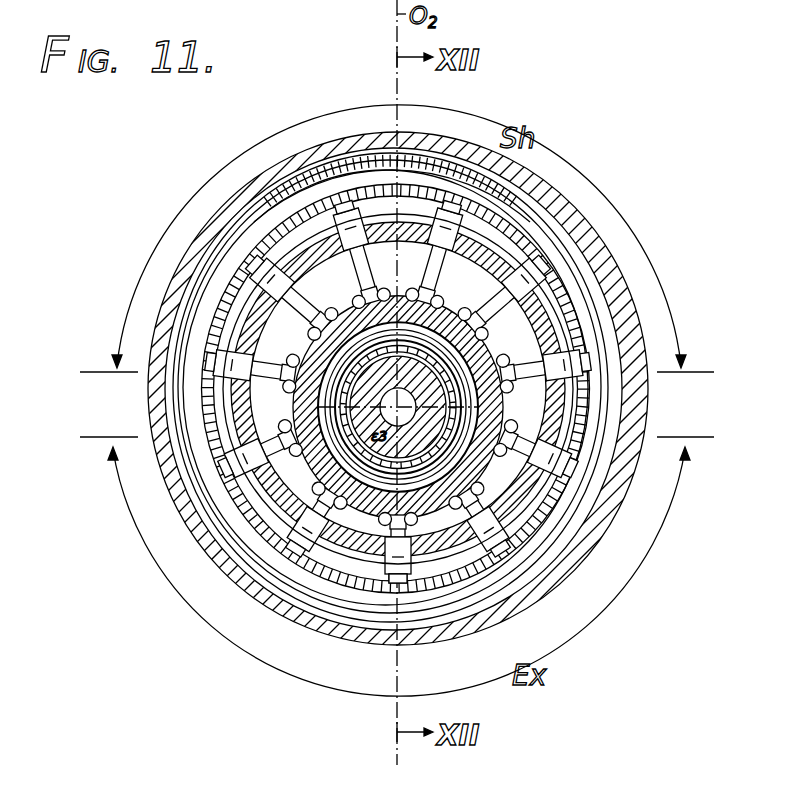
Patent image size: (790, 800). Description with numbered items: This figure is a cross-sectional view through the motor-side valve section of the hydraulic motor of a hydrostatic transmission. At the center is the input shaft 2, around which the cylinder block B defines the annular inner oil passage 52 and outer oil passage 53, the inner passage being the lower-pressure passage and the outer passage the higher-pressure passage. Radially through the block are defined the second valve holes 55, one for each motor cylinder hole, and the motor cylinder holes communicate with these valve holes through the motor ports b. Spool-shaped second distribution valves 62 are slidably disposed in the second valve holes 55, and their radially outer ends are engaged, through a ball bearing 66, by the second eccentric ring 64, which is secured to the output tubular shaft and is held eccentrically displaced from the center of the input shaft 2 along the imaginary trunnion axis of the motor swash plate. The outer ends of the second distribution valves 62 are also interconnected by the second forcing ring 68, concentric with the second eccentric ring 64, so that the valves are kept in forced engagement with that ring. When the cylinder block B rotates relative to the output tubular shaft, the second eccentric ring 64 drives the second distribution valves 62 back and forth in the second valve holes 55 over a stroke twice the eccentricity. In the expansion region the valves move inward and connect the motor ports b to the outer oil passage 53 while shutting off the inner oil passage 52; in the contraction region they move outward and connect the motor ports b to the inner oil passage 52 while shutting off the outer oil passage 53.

The input shaft 2 is at (402, 411).
The inner oil passage 52 is at (280, 345).
The outer oil passage 53 is at (313, 287).
The second valve holes 55 is at (403, 600).
The second distribution valves 62 is at (495, 208).
The second eccentric ring 64 is at (582, 227).
The ball bearing 66 is at (320, 178).
The second forcing ring 68 is at (577, 303).
The cylinder block B is at (375, 225).
The motor ports b is at (397, 404).